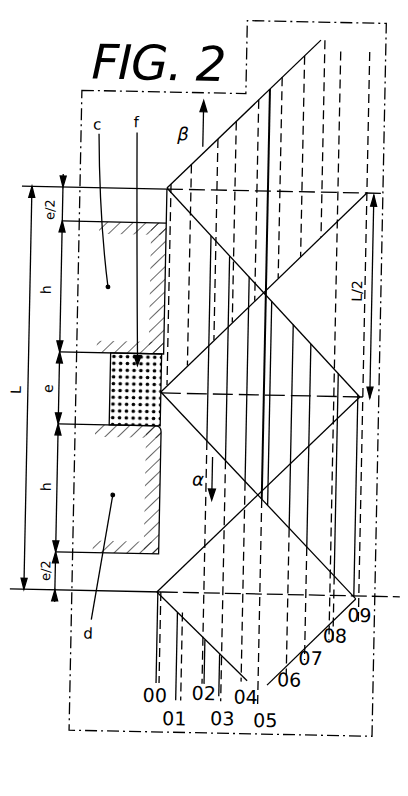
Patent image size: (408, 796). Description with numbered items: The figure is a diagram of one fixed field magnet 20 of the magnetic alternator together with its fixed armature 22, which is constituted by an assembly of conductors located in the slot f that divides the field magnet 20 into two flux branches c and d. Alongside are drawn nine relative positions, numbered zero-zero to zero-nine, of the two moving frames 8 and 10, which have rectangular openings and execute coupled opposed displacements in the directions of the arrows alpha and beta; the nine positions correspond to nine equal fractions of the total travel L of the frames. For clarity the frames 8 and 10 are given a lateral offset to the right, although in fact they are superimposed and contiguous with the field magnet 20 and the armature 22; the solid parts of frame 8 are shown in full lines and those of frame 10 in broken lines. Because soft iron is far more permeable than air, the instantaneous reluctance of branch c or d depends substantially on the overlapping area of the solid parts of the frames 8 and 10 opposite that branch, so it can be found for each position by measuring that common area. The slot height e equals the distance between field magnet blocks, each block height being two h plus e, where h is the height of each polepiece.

The frame 8 is at (302, 347).
The frame 10 is at (305, 242).
The fixed field magnet 20 is at (92, 264).
The armature 22 is at (159, 405).